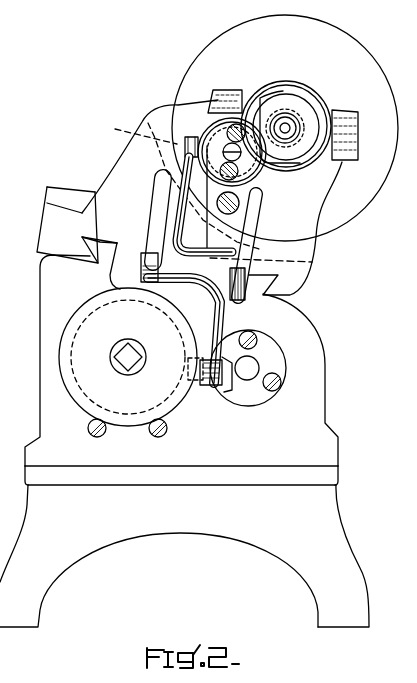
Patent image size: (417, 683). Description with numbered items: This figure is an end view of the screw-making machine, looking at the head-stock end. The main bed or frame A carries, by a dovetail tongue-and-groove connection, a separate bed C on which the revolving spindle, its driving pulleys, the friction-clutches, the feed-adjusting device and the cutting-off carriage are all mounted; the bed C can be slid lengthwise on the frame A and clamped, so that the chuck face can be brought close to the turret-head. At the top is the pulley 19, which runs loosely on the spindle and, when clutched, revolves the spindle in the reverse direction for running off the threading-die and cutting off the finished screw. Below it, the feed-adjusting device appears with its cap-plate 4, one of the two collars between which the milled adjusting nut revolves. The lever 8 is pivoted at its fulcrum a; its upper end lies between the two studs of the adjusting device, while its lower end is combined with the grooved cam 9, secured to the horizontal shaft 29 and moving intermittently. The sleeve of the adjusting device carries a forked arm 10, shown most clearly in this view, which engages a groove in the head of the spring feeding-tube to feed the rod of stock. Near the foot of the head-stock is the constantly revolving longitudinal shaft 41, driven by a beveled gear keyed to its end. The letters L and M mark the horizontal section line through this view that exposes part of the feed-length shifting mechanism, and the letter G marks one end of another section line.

The main bed or frame A is at (184, 432).
The head-stock bed C is at (189, 200).
The pulley 19 is at (285, 128).
The section line L M is at (307, 170).
The cap-plate 4 is at (232, 152).
The section line G H G is at (189, 139).
The section line L M L is at (139, 131).
The forked arm 10 is at (258, 100).
The lever 8 is at (190, 335).
The fulcrum a is at (144, 254).
The grooved cam 9 is at (128, 362).
The horizontal shaft 29 is at (128, 357).
The longitudinal shaft 41 is at (248, 368).